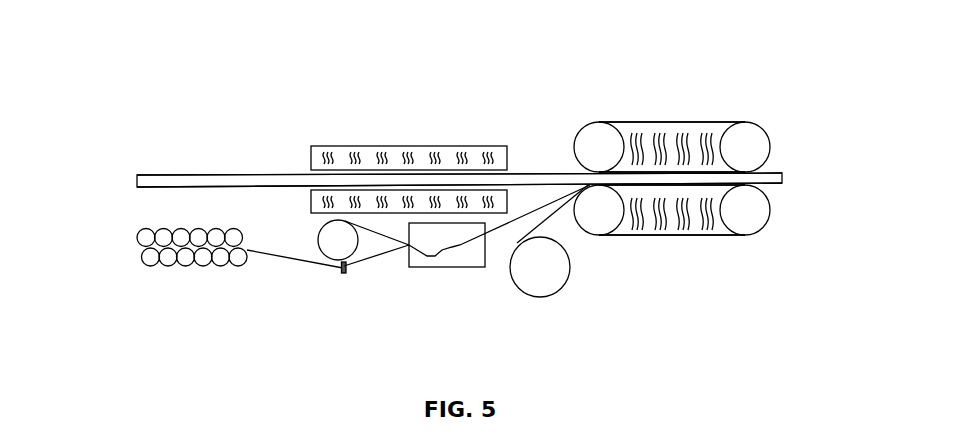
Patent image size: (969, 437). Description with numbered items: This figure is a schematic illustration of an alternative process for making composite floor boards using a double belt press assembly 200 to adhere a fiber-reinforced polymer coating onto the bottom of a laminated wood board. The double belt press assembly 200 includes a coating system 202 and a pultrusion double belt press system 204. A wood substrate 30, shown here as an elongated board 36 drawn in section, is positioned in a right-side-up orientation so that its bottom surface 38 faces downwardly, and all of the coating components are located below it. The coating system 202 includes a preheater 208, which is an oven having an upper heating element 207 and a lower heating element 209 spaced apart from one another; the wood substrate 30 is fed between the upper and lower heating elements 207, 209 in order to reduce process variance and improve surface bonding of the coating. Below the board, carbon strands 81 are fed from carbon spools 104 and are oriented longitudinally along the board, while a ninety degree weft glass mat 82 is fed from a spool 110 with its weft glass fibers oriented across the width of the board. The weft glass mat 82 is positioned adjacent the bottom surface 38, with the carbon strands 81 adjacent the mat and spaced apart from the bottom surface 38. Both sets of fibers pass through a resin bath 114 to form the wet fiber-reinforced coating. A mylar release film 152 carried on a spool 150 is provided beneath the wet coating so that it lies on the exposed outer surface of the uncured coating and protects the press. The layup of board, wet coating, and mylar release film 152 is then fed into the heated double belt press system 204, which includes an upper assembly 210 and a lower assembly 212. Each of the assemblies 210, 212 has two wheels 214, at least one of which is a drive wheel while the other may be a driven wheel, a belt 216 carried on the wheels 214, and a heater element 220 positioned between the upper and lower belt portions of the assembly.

The double belt press assembly 200 is at (127, 88).
The wood substrate 30 is at (163, 172).
The web / laminate 36 is at (200, 174).
The bottom surface 38 is at (152, 188).
The preheater 208 is at (409, 124).
The upper heating element 207 is at (432, 150).
The lower heating element 209 is at (493, 200).
The coating system 202 is at (357, 284).
The guide rollers 104 is at (152, 266).
The carbon strands 81 is at (293, 262).
The 90 degree weft glass mat 82 is at (383, 233).
The spool 110 is at (318, 236).
The resin bath 114 is at (447, 276).
The spool 150 is at (540, 298).
The mylar release film 152 is at (556, 212).
The double belt press system 204 is at (676, 195).
The upper assembly 210 is at (688, 96).
The lower assembly 212 is at (725, 250).
The wheels 214 is at (595, 133).
The belt 216 is at (668, 122).
The heater element 220 is at (690, 143).